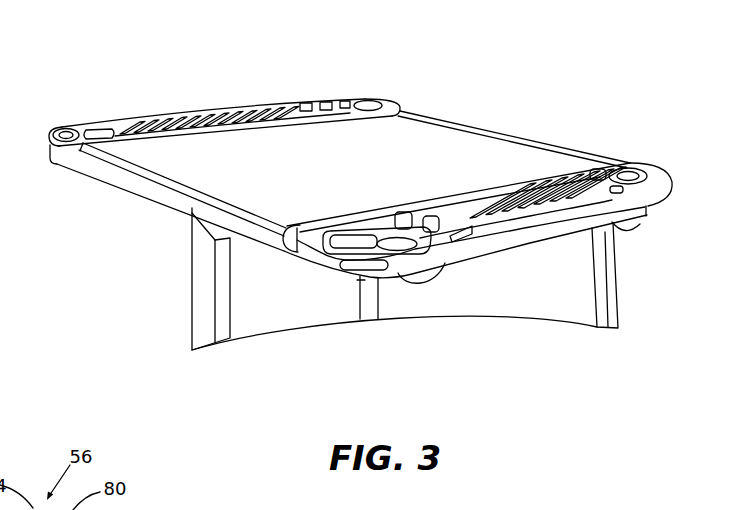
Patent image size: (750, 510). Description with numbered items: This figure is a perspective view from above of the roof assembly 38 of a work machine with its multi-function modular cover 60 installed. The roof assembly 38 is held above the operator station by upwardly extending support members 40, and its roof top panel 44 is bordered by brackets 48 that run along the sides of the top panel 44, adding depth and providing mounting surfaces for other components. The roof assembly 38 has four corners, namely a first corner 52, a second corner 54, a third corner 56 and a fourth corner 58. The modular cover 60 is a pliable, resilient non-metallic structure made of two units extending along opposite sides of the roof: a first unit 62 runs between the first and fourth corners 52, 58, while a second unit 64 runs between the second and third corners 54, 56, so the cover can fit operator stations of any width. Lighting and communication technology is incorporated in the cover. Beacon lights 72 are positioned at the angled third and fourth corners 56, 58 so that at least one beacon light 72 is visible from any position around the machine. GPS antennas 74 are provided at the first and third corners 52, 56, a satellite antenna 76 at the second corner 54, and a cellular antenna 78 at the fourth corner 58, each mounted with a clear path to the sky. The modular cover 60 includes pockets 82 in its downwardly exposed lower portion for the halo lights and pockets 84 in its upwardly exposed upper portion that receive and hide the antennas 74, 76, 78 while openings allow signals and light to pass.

The roof assembly 38 is at (491, 74).
The support members 40 is at (196, 319).
The roof top panel 44 is at (285, 168).
The brackets 48 is at (160, 172).
The first corner 52 is at (679, 181).
The second corner 54 is at (366, 91).
The third corner 56 is at (50, 121).
The fourth corner 58 is at (357, 289).
The modular cover 60 is at (200, 124).
The first unit 62 is at (527, 238).
The second unit 64 is at (262, 108).
The beacon lights 72 is at (388, 275).
The GPS antennas 74 is at (77, 136).
The satellite antenna 76 is at (369, 118).
The cellular antenna 78 is at (344, 236).
The pockets 82 is at (441, 270).
The pockets 84 is at (397, 240).